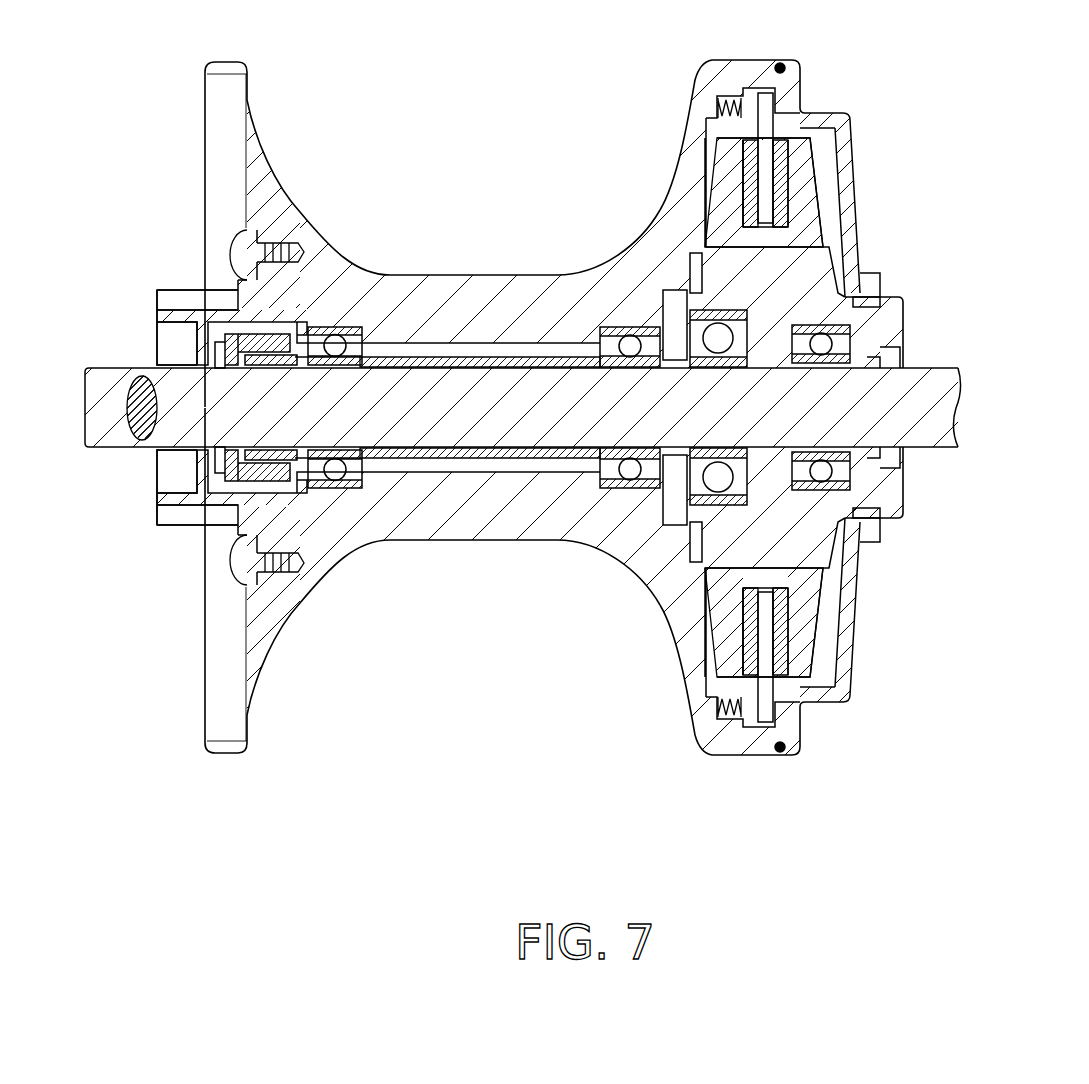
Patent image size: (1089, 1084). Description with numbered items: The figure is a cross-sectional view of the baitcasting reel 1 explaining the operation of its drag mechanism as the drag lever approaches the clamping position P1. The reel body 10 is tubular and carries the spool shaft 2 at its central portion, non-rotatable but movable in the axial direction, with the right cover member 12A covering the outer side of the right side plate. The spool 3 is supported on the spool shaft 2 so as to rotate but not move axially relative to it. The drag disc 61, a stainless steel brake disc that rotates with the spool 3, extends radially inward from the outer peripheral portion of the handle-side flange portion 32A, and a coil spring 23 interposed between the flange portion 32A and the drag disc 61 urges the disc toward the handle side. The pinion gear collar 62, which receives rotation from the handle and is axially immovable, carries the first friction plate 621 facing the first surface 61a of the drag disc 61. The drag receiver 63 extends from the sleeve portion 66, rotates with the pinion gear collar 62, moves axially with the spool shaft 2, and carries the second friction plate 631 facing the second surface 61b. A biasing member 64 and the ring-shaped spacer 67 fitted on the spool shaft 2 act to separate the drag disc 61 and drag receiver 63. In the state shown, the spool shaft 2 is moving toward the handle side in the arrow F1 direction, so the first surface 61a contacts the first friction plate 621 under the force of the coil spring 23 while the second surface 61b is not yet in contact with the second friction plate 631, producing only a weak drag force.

The baitcasting reel 1 is at (854, 96).
The spool shaft 2 is at (930, 387).
The spool 3 is at (428, 274).
The reel body 10 is at (719, 759).
The right cover member 12A is at (858, 646).
The coil spring 23 is at (723, 97).
The flange portion 32A is at (678, 655).
The drag disc 61 is at (768, 170).
The first surface 61a is at (777, 187).
The second surface 61b is at (753, 158).
The pinion gear collar 62 is at (830, 240).
The first friction plate 621 is at (783, 204).
The drag receiver 63 is at (703, 213).
The second friction plate 631 is at (750, 190).
The biasing member 64 is at (252, 337).
The sleeve portion 66 is at (507, 356).
The spacer 67 is at (232, 480).
The clamping position P1 is at (686, 100).
The arrow F1 direction F1 is at (1072, 408).